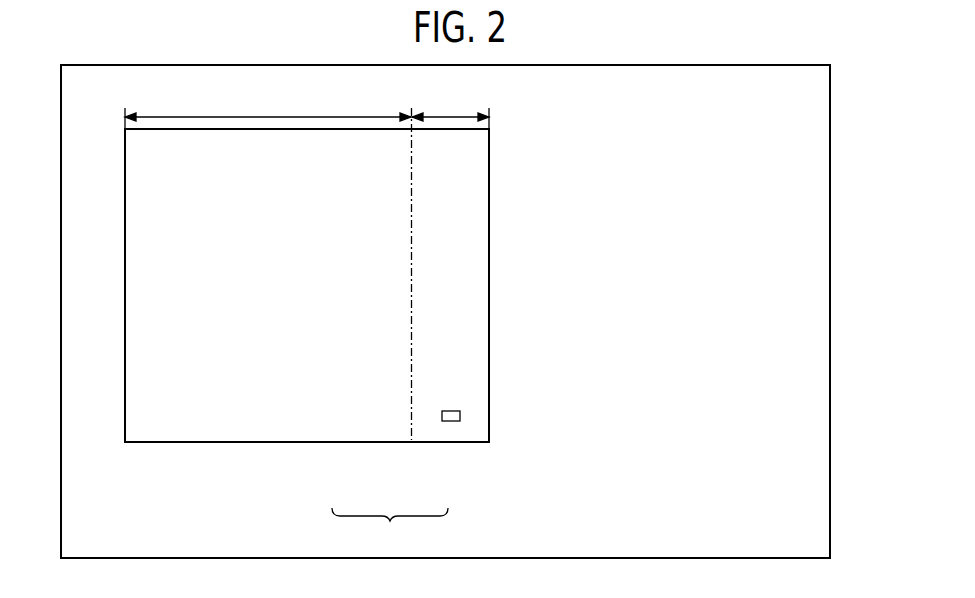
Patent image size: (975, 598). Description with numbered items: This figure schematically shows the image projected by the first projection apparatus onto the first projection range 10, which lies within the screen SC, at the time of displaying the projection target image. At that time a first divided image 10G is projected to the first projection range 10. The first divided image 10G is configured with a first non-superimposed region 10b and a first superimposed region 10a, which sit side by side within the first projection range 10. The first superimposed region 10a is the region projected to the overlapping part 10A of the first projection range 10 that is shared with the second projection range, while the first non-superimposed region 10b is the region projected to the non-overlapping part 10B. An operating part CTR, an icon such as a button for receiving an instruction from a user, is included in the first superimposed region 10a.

The screen SC is at (830, 400).
The first projection range 10 is at (125, 267).
The non-overlapping part 10B is at (268, 106).
The overlapping part 10A is at (450, 104).
The operating part CTR is at (458, 410).
The first non-superimposed region 10b is at (342, 427).
The first superimposed region 10a is at (450, 427).
The first divided image 10G is at (390, 533).